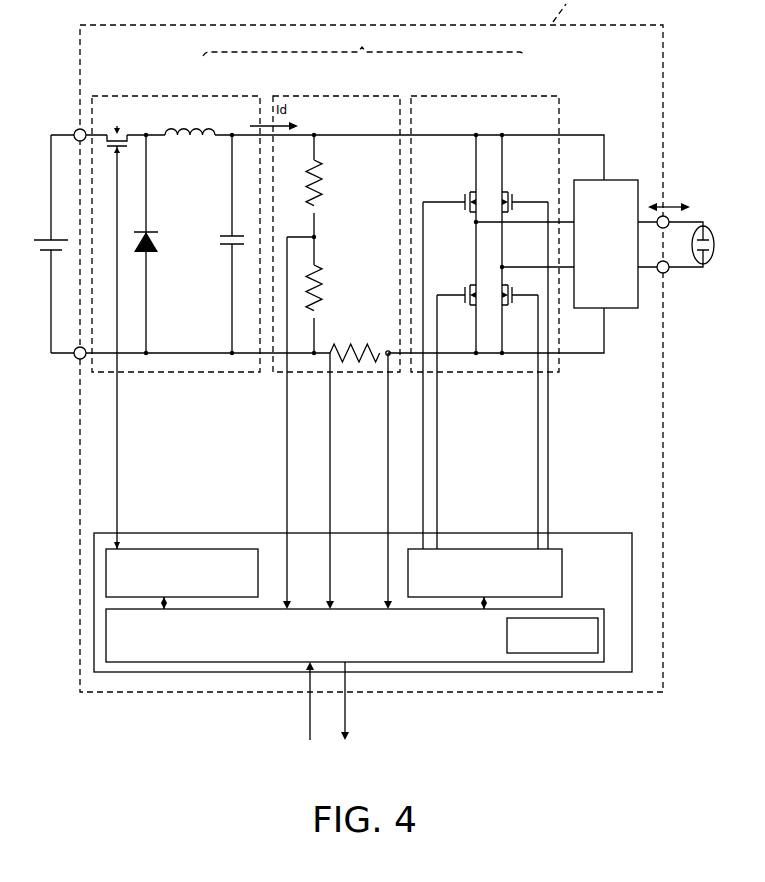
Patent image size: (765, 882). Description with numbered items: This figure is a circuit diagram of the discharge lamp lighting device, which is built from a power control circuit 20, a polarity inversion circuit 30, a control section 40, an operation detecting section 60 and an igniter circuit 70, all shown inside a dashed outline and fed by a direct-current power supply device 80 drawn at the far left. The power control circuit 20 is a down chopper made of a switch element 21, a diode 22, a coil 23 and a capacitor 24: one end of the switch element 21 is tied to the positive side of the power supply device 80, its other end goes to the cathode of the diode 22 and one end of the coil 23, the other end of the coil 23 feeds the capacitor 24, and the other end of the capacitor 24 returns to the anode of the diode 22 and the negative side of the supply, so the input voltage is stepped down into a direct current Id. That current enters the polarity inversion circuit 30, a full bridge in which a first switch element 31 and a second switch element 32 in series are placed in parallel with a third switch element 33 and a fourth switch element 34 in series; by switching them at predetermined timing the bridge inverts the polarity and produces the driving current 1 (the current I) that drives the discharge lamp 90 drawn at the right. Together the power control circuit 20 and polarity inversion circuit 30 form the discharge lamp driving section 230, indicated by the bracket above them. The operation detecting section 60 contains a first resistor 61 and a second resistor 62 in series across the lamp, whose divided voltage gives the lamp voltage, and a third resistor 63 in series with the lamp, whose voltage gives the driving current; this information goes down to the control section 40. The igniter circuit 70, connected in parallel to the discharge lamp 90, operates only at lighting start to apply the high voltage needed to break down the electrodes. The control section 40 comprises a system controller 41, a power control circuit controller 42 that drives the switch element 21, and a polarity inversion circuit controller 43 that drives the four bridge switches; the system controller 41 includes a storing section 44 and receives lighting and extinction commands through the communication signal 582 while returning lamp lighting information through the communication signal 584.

The driving current 1 is at (669, 196).
The power control circuit 20 is at (210, 96).
The switch element 21 is at (117, 329).
The diode 22 is at (152, 244).
The coil 23 is at (195, 122).
The capacitor 24 is at (237, 244).
The polarity inversion circuit 30 is at (495, 96).
The first switch element 31 is at (449, 363).
The second switch element 32 is at (456, 409).
The third switch element 33 is at (525, 363).
The fourth switch element 34 is at (520, 409).
The control section 40 is at (452, 536).
The system controller 41 is at (582, 609).
The power control circuit controller 42 is at (206, 549).
The polarity inversion circuit controller 43 is at (558, 549).
The storing section 44 is at (598, 620).
The operation detecting section 60 is at (350, 375).
The first resistor 61 is at (328, 185).
The second resistor 62 is at (328, 295).
The third resistor 63 is at (359, 463).
The igniter circuit 70 is at (624, 180).
The direct-current power supply device 80 is at (44, 234).
The discharge lamp 90 is at (706, 226).
The discharge lamp driving section 230 is at (364, 44).
The communication signal 582 is at (300, 718).
The communication signal 584 is at (352, 718).